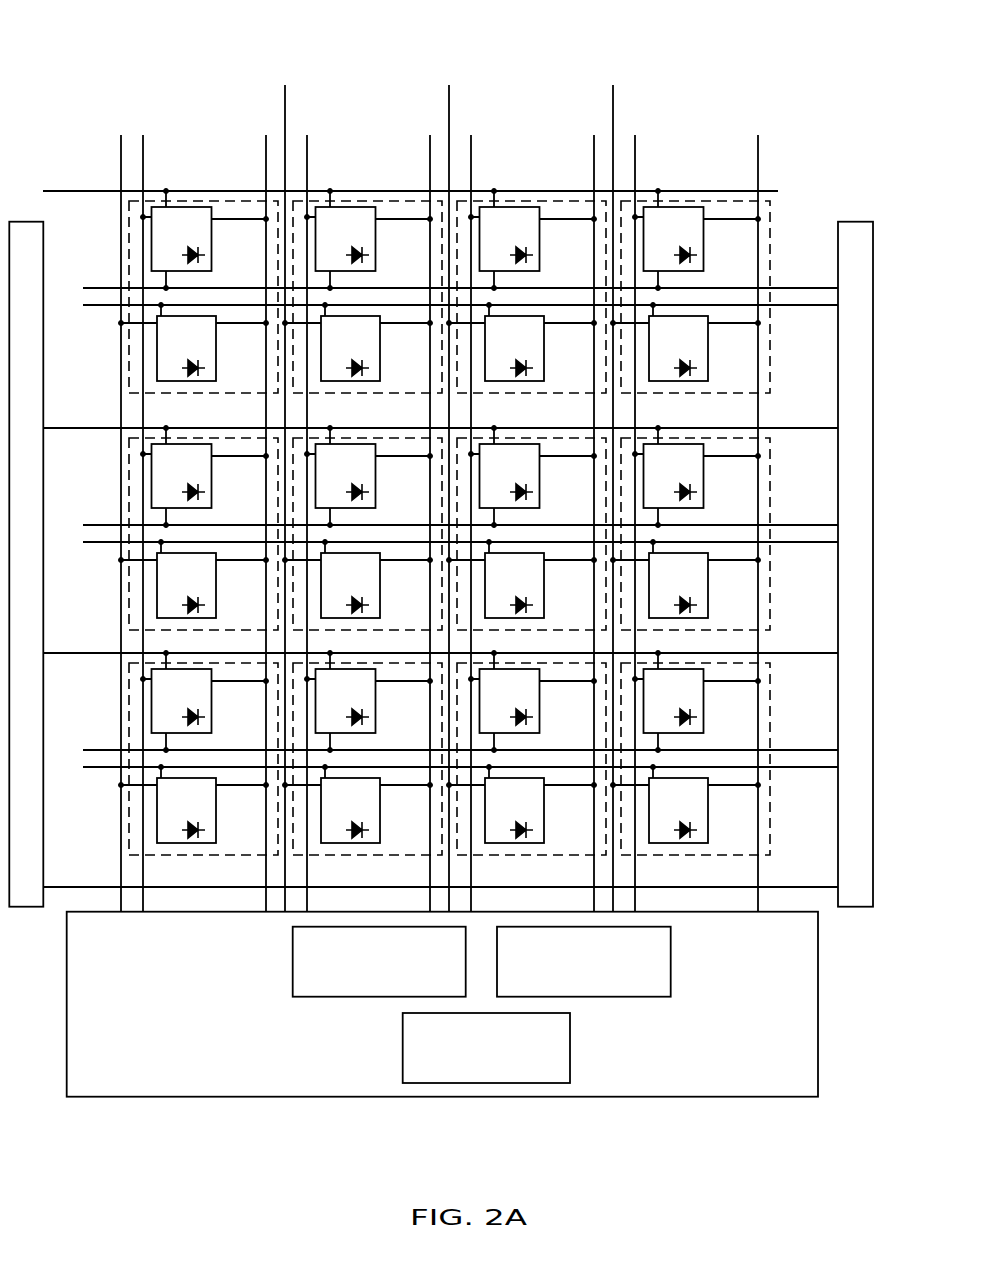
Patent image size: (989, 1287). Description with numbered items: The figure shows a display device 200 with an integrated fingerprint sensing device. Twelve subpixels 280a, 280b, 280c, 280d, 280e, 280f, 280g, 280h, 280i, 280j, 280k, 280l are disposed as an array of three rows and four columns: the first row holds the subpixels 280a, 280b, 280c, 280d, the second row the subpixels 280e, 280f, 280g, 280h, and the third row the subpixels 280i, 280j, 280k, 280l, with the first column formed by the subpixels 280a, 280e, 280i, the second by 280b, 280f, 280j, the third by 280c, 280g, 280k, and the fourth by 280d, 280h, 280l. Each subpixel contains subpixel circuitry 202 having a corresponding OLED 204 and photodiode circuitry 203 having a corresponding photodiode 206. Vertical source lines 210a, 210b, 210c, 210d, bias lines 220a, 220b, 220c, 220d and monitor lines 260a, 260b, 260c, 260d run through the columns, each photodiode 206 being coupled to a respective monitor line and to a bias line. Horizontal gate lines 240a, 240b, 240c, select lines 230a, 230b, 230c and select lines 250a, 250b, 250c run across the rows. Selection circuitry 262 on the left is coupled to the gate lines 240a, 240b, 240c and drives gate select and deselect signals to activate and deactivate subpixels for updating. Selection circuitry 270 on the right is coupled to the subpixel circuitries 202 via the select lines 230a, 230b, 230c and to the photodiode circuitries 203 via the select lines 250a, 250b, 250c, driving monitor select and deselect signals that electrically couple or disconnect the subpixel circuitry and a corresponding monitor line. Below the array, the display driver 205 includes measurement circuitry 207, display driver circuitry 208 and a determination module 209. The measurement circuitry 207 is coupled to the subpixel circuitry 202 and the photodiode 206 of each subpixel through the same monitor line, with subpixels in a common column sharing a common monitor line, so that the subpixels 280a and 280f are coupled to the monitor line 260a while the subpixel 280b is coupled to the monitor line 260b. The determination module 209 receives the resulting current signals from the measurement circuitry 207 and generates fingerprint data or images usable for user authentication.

The display device 200 is at (67, 35).
The subpixel circuitry 202 is at (204, 242).
The photodiode circuitry 203 is at (210, 353).
The OLED 204 is at (199, 265).
The photodiode 206 is at (199, 370).
The display driver 205 is at (278, 1079).
The measurement circuitry 207 is at (450, 987).
The display driver circuitry 208 is at (655, 987).
The determination module 209 is at (555, 1073).
The source line 210a is at (143, 154).
The source line 210b is at (307, 163).
The source line 210c is at (471, 163).
The source line 210d is at (635, 163).
The bias line 220a is at (120, 160).
The bias line 220b is at (285, 106).
The bias line 220c is at (449, 106).
The bias line 220d is at (613, 106).
The monitor line 260a is at (266, 177).
The monitor line 260b is at (430, 177).
The monitor line 260c is at (594, 177).
The monitor line 260d is at (758, 177).
The gate line 240a is at (85, 287).
The gate line 240b is at (77, 432).
The gate line 240c is at (77, 657).
The select line 230a is at (801, 287).
The select line 230b is at (801, 524).
The select line 230c is at (801, 749).
The select line 250a is at (801, 308).
The select line 250b is at (801, 545).
The select line 250c is at (801, 770).
The selection circuitry 262 is at (38, 417).
The selection circuitry 270 is at (846, 712).
The subpixel 280a is at (129, 352).
The subpixel 280b is at (367, 311).
The subpixel 280c is at (531, 311).
The subpixel 280d is at (695, 311).
The subpixel 280e is at (166, 534).
The subpixel 280f is at (367, 548).
The subpixel 280g is at (531, 548).
The subpixel 280h is at (695, 548).
The subpixel 280i is at (166, 759).
The subpixel 280j is at (367, 773).
The subpixel 280k is at (531, 773).
The subpixel 280l is at (695, 773).